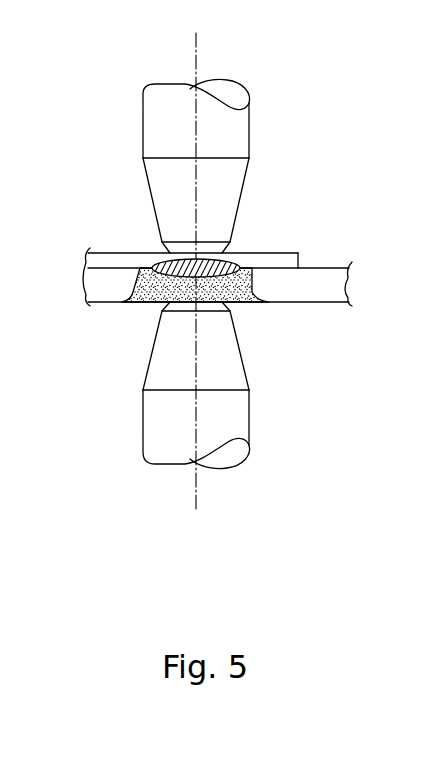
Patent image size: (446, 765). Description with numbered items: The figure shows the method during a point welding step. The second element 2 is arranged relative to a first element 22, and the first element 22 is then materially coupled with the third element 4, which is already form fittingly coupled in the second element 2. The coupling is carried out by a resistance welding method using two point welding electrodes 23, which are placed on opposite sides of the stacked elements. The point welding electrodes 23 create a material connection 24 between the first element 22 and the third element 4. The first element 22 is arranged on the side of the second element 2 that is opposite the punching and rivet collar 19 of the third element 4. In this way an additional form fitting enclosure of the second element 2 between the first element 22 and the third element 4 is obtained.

The second element 2 is at (320, 279).
The first element 22 is at (268, 263).
The point welding electrodes 23 is at (214, 124).
The material connection 24 is at (222, 257).
The rivet collar 19 is at (134, 298).
The third element 4 is at (226, 297).